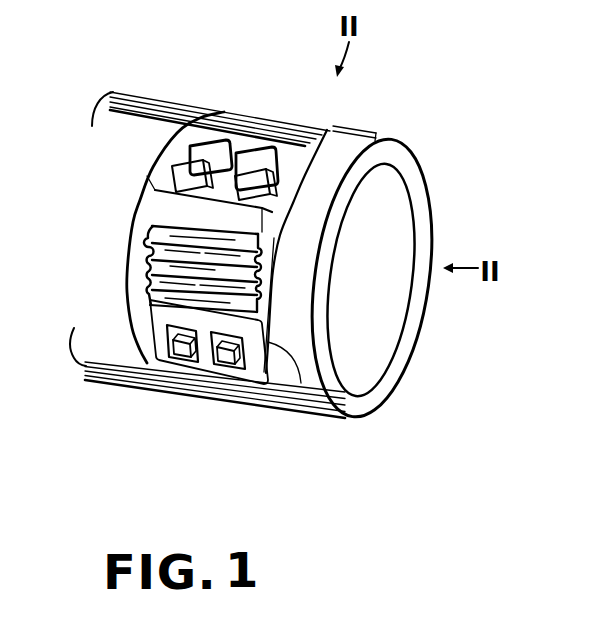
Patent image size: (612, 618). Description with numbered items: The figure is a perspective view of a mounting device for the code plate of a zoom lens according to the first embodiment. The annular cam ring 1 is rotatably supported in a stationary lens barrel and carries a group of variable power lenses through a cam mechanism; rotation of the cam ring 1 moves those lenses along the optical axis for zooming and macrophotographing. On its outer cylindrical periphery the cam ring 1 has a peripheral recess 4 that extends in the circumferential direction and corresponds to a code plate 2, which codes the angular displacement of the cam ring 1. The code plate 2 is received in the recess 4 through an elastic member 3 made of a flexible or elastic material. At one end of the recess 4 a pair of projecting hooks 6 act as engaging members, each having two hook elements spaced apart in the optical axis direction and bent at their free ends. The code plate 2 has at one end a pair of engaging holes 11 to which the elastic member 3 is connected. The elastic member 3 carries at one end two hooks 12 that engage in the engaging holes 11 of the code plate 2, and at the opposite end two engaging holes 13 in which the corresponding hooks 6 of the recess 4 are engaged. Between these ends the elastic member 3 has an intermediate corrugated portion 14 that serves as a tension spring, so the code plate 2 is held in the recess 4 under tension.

The cam ring 1 is at (400, 371).
The code plate 2 is at (280, 140).
The elastic member 3 is at (253, 372).
The peripheral recess 4 is at (138, 306).
The projecting hooks 6 is at (227, 363).
The engaging holes 11 is at (256, 151).
The hooks 12 is at (187, 175).
The engaging holes 13 is at (168, 330).
The corrugated portion 14 is at (148, 274).